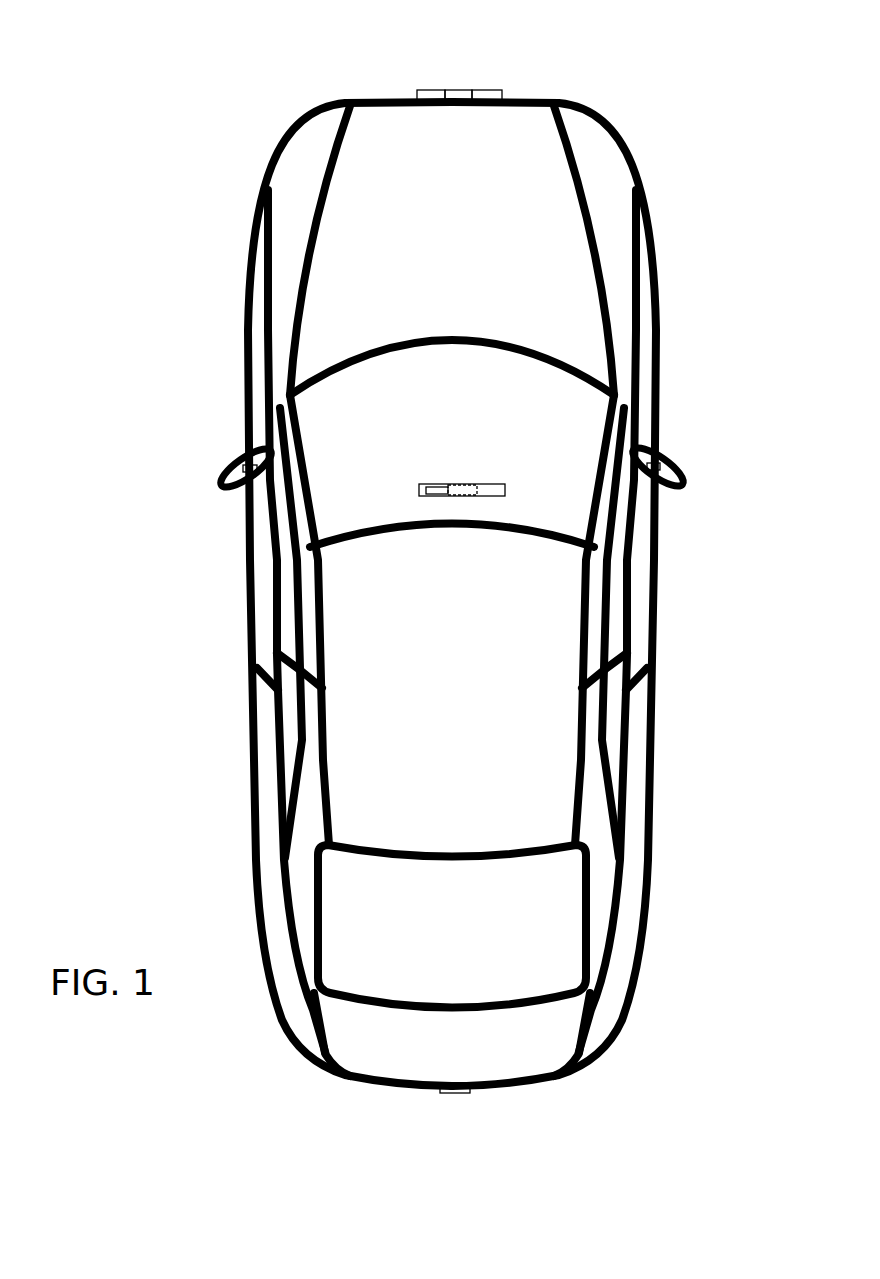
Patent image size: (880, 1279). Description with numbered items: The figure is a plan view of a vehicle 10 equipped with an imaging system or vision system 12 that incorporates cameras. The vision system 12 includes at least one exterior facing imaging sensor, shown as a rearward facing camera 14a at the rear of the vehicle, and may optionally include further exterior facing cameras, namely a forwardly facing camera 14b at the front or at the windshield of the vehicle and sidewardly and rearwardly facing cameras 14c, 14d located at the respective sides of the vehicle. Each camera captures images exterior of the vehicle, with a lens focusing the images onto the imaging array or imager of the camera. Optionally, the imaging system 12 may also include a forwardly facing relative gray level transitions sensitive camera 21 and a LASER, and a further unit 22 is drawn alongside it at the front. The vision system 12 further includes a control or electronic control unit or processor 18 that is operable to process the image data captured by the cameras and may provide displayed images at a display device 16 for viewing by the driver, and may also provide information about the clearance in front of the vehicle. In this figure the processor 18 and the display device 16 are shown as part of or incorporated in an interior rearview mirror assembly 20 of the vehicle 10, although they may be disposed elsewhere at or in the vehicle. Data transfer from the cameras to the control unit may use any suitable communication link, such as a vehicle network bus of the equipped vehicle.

The vehicle 10 is at (200, 181).
The vision system 12 is at (403, 1113).
The rearward facing camera 14a is at (457, 1090).
The forwardly facing camera 14b is at (463, 90).
The sidewardly/rearwardly facing camera 14c is at (232, 462).
The sidewardly/rearwardly facing camera 14d is at (668, 462).
The display device 16 is at (437, 488).
The electronic control unit 18 is at (458, 482).
The interior rearview mirror assembly 20 is at (505, 485).
The relative gray level transitions sensitive camera 21 is at (443, 90).
The communication module 22 is at (495, 90).